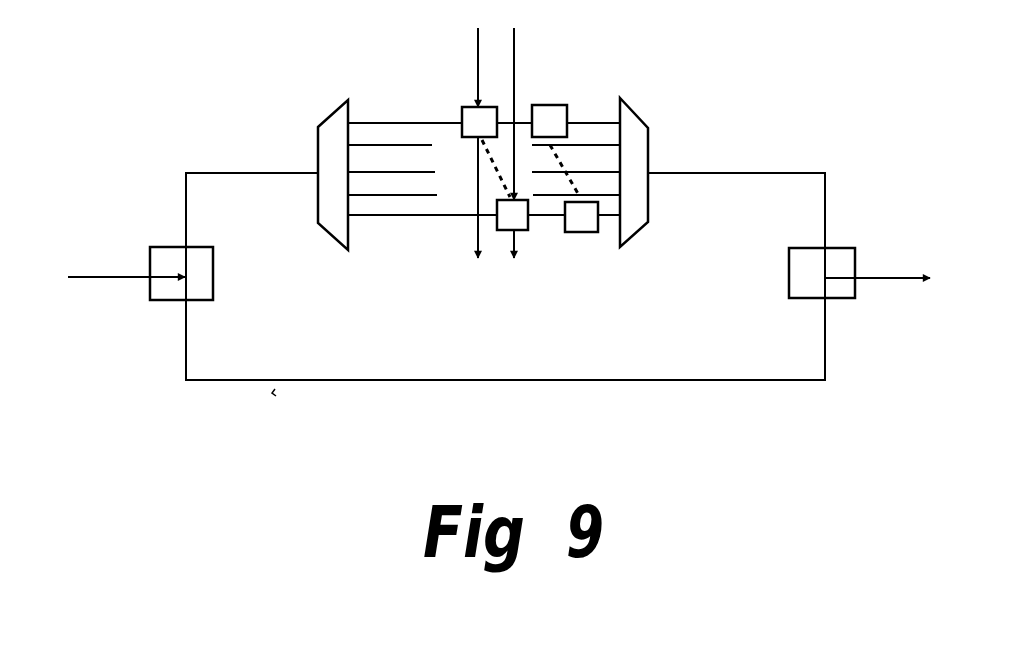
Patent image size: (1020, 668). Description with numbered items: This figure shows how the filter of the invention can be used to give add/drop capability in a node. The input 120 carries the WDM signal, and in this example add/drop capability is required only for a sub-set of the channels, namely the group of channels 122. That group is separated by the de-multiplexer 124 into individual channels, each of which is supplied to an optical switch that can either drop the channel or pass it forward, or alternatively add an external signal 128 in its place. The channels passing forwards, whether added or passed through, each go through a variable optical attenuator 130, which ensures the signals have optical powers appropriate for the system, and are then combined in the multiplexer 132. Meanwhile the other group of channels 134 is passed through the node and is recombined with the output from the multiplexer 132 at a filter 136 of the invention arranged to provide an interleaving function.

The input 120 is at (90, 278).
The group of channels 122 is at (215, 173).
The de-multiplexer 124 is at (330, 113).
The external signal 128 is at (478, 43).
The variable optical attenuator 130 is at (547, 105).
The multiplexer 132 is at (637, 112).
The other group of channels 134 is at (372, 381).
The filter 136 is at (833, 248).